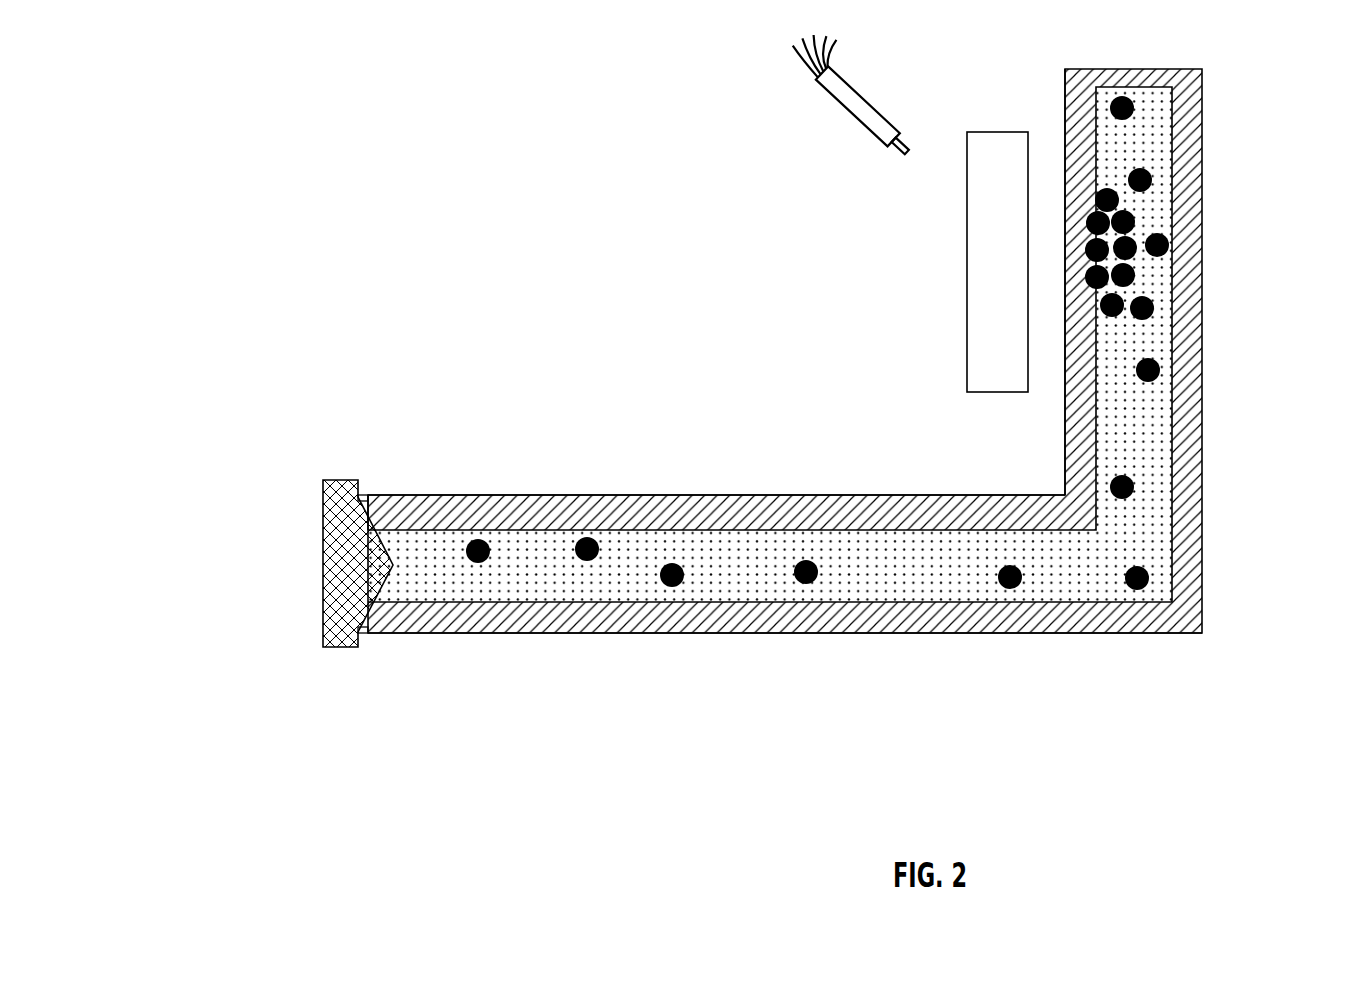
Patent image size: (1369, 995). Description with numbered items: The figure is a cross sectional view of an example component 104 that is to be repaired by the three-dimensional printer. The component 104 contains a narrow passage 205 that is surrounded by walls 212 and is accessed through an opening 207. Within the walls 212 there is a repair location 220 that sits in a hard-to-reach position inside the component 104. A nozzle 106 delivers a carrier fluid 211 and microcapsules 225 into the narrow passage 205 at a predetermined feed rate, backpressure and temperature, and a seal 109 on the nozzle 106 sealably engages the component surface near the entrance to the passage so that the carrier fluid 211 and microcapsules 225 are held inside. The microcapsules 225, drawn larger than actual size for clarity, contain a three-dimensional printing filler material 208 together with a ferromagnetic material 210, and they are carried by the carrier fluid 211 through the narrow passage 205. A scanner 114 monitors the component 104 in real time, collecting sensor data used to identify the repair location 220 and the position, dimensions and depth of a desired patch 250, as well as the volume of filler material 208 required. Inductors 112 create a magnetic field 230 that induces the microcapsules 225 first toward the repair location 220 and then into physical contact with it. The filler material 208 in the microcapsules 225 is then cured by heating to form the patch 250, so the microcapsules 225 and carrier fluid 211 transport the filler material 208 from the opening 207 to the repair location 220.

The component to be repaired 104 is at (1206, 85).
The nozzle 106 is at (322, 573).
The seal 109 is at (365, 495).
The inductors 112 is at (1013, 274).
The scanner 114 is at (858, 103).
The narrow passage 205 is at (886, 536).
The opening 207 is at (405, 496).
The filler material 208 is at (1070, 633).
The ferromagnetic material 210 is at (967, 633).
The carrier fluid 211 is at (840, 633).
The walls 212 is at (1191, 253).
The repair location 220 is at (1065, 172).
The microcapsules 225 is at (628, 633).
The magnetic field 230 is at (1043, 345).
The patch 250 is at (1122, 312).